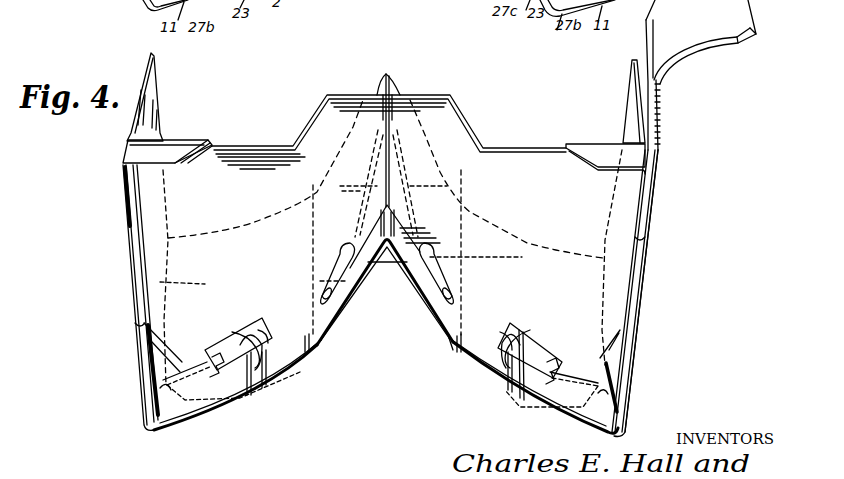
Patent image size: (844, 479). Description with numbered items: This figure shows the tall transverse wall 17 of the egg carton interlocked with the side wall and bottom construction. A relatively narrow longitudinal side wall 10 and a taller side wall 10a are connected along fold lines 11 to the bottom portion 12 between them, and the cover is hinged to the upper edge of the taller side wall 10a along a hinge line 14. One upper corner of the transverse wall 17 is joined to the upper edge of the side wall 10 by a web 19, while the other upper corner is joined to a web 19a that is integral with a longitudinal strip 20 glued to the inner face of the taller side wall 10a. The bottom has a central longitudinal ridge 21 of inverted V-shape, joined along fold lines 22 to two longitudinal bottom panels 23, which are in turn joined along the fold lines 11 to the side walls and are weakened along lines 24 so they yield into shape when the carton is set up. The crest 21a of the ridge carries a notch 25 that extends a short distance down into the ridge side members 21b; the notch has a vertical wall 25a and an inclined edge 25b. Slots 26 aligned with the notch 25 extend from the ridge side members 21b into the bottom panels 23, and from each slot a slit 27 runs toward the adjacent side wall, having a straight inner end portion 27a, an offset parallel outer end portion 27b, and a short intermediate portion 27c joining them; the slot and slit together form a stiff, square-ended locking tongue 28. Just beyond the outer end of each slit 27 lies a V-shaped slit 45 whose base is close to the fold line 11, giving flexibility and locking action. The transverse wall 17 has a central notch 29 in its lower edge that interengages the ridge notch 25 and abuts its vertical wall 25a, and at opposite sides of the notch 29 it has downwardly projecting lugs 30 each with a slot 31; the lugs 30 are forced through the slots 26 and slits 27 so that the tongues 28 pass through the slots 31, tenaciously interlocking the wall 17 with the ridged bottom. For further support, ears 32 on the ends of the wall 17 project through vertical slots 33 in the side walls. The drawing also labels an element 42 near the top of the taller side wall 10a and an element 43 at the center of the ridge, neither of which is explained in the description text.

The longitudinal side wall 10 is at (142, 358).
The taller side wall 10a is at (660, 135).
The fold lines 11 is at (148, 420).
The bottom portion 12 is at (186, 434).
The hinge line 14 is at (660, 36).
The tall transverse wall 17 is at (528, 197).
The web 19 is at (122, 156).
The web 19a is at (598, 152).
The longitudinal strip 20 is at (628, 84).
The central longitudinal ridge 21 is at (426, 266).
The crest of the ridge 21a is at (393, 80).
The ridge side members 21b is at (412, 292).
The fold lines 22 is at (448, 340).
The longitudinal bottom panels 23 is at (226, 414).
The weakened lines 24 is at (268, 398).
The notch 25 is at (398, 192).
The vertical wall of the ridge notch 25a is at (372, 225).
The inclined edge 25b is at (270, 169).
The slots 26 is at (453, 357).
The slit 27 is at (258, 366).
The inner end portion of slit 27a is at (233, 322).
The outer end portion of slit 27b is at (195, 350).
The intermediate portion of slit 27c is at (374, 379).
The locking tongue 28 is at (242, 342).
The central notch 29 is at (336, 256).
The lugs 30 is at (151, 342).
The slot 31 is at (226, 348).
The ears 32 is at (126, 276).
The vertical slots 33 is at (138, 232).
The curved flange 42 is at (703, 50).
The center rib 43 is at (392, 138).
The V-shaped slit 45 is at (383, 402).